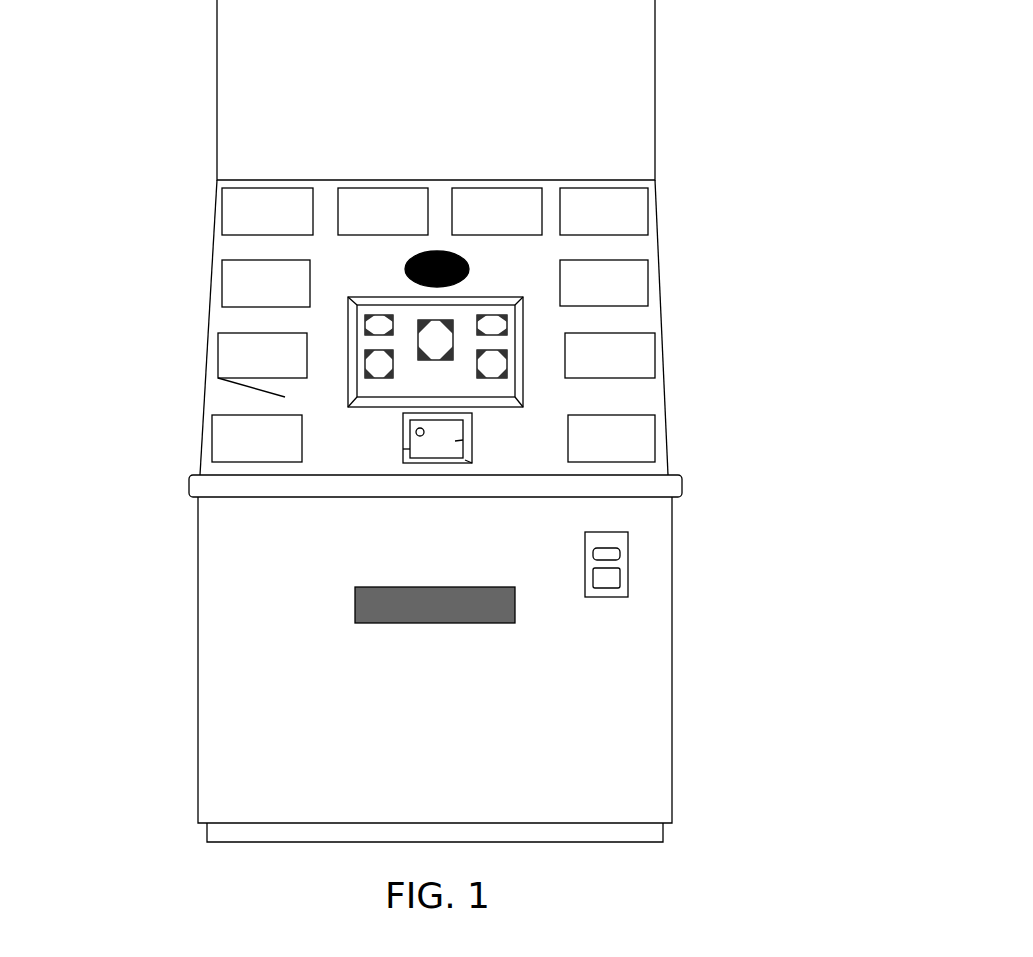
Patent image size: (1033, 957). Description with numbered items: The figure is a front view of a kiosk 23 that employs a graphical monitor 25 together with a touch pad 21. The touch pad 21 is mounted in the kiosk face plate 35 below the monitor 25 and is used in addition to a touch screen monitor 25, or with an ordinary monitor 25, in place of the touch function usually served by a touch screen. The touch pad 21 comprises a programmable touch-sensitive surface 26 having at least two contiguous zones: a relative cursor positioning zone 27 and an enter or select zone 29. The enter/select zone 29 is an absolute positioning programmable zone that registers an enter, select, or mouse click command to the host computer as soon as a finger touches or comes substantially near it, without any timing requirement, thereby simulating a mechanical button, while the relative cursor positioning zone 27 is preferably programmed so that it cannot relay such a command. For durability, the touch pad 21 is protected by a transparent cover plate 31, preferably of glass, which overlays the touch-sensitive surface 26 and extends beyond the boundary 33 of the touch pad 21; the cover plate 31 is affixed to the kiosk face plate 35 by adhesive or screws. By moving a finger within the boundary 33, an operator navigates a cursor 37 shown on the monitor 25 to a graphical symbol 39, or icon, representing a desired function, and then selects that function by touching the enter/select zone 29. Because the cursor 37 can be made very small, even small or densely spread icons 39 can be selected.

The touch pad 21 is at (387, 460).
The kiosk 23 is at (683, 178).
The monitor 25 is at (532, 353).
The touch-sensitive surface 26 is at (436, 439).
The relative cursor positioning zone 27 is at (455, 441).
The enter/select zone 29 is at (402, 428).
The cover plate 31 is at (470, 460).
The boundary 33 is at (403, 449).
The kiosk face plate 35 is at (285, 397).
The cursor 37 is at (466, 347).
The graphical symbol 39 is at (368, 322).